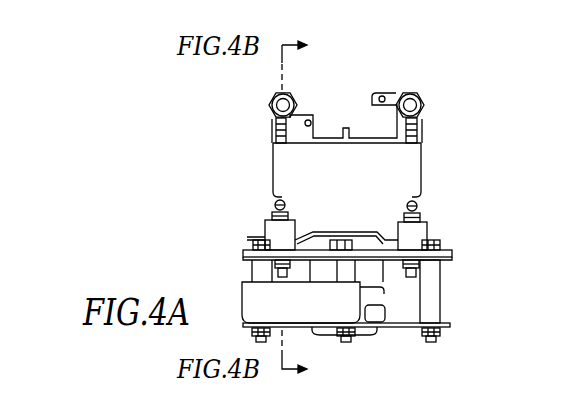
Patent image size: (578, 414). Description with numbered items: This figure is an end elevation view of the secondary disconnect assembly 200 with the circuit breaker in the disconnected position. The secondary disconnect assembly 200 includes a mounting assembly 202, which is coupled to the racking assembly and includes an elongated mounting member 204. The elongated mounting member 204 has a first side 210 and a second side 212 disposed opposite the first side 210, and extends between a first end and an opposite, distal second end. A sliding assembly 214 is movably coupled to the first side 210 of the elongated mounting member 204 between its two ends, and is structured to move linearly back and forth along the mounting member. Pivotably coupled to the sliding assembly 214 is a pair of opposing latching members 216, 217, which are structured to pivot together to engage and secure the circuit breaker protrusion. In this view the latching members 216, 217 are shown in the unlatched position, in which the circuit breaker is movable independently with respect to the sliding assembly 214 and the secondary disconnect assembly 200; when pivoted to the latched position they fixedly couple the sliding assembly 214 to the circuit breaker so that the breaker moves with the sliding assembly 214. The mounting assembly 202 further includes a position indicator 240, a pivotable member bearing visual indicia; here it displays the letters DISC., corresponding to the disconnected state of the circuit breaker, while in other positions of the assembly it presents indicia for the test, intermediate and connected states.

The secondary disconnect assembly 200 is at (354, 398).
The mounting assembly 202 is at (221, 246).
The elongated mounting member 204 is at (450, 245).
The first side 210 is at (245, 252).
The second side 212 is at (250, 263).
The sliding assembly 214 is at (432, 170).
The latching member 216 is at (282, 135).
The latching member 217 is at (418, 132).
The position indicator 240 is at (458, 325).